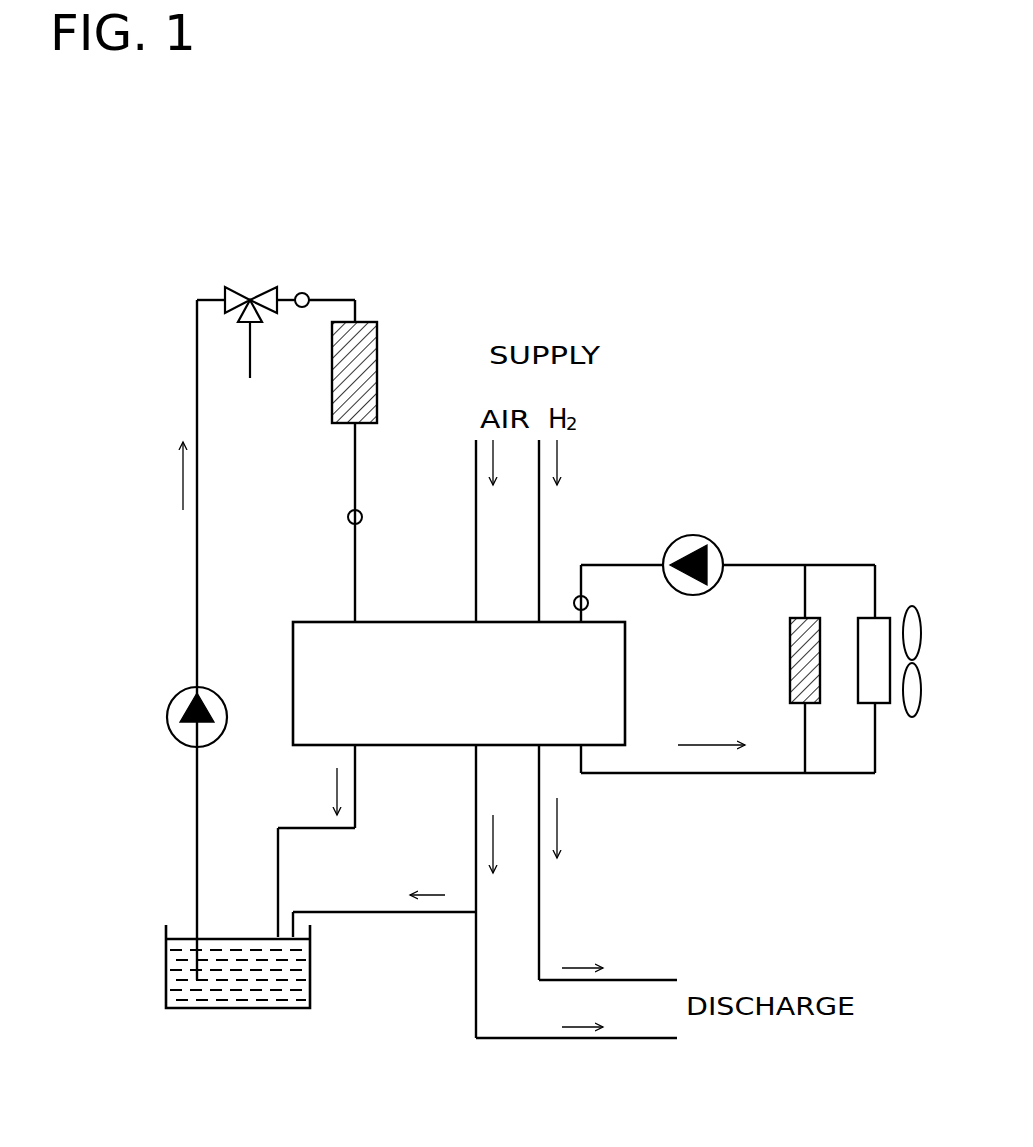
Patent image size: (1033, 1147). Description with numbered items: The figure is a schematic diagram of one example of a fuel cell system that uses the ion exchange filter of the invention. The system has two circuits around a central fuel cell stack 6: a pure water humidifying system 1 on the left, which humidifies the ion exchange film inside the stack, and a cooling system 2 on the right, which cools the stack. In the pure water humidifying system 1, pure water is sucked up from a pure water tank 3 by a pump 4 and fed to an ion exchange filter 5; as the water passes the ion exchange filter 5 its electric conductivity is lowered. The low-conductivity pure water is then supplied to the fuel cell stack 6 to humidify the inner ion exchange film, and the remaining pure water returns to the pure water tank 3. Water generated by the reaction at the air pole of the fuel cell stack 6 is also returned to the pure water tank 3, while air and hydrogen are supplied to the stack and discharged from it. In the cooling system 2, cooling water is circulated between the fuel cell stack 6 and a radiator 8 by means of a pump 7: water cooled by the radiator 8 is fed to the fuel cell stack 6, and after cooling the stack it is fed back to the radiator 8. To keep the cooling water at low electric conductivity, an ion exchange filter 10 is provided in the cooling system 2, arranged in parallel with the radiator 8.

The pure water humidifying system 1 is at (291, 200).
The cooling system 2 is at (792, 478).
The pure water tank 3 is at (208, 1010).
The pump 4 is at (170, 705).
The ion exchange filter 5 is at (382, 355).
The fuel cell stack 6 is at (466, 705).
The pump 7 is at (693, 595).
The radiator 8 is at (886, 704).
The ion exchange filter 10 is at (824, 636).